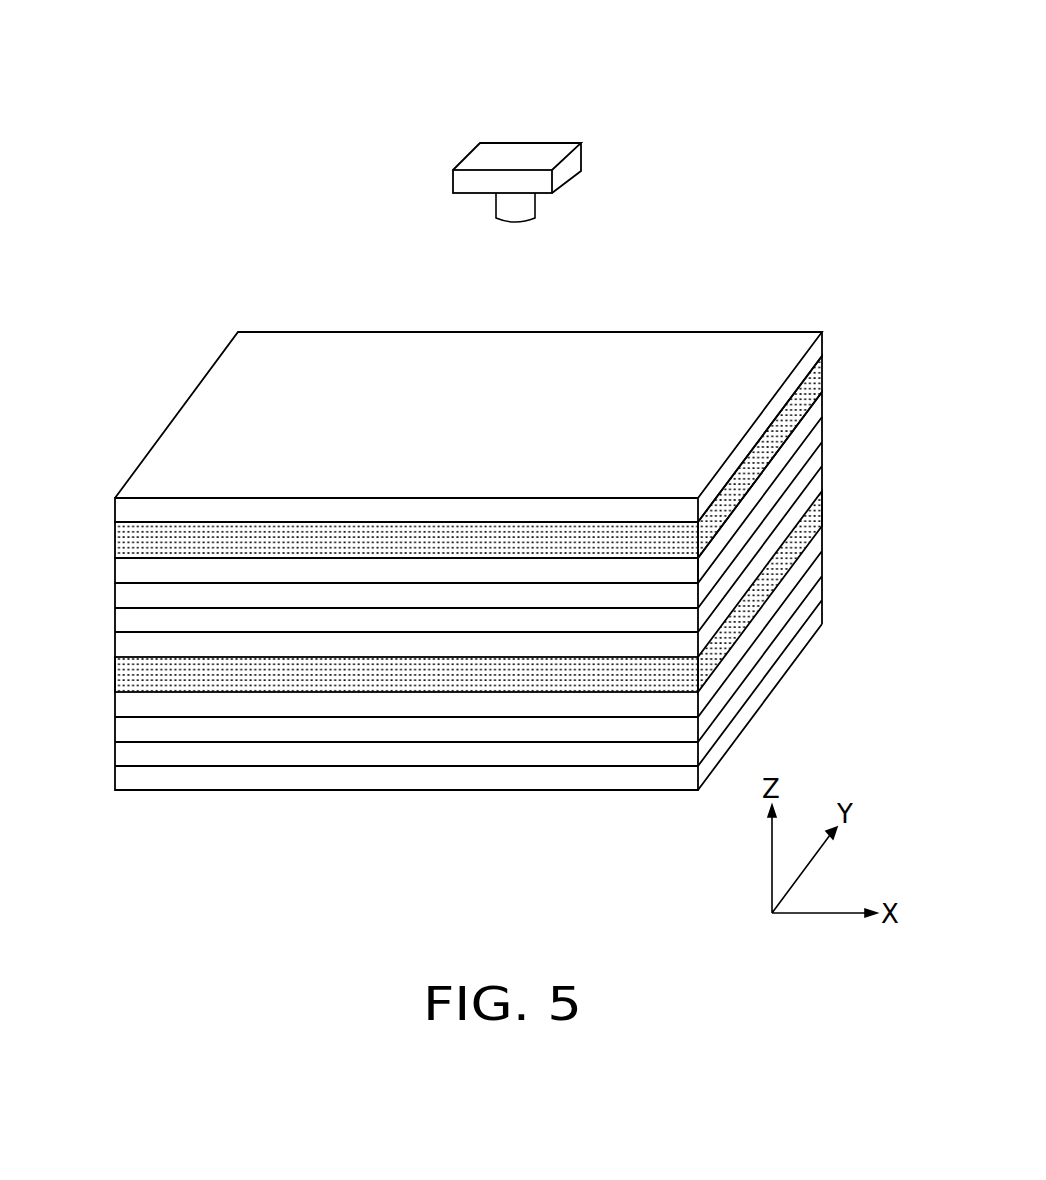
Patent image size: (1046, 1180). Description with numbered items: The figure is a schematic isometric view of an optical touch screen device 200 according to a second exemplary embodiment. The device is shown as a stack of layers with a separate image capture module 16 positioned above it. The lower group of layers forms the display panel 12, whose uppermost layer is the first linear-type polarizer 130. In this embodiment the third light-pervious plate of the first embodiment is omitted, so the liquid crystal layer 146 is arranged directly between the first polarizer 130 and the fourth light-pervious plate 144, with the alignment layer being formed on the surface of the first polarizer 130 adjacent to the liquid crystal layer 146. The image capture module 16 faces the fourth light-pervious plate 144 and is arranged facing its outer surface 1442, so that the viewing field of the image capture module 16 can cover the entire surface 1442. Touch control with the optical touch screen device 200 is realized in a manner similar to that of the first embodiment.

The optical touch screen device 200 is at (527, 36).
The image capture module 16 is at (488, 158).
The surface of the fourth light-pervious plate 1442 is at (627, 347).
The fourth light-pervious plate 144 is at (510, 386).
The liquid crystal layer 146 is at (812, 387).
The first linear-type polarizer 130 is at (812, 421).
The display panel 12 is at (110, 572).